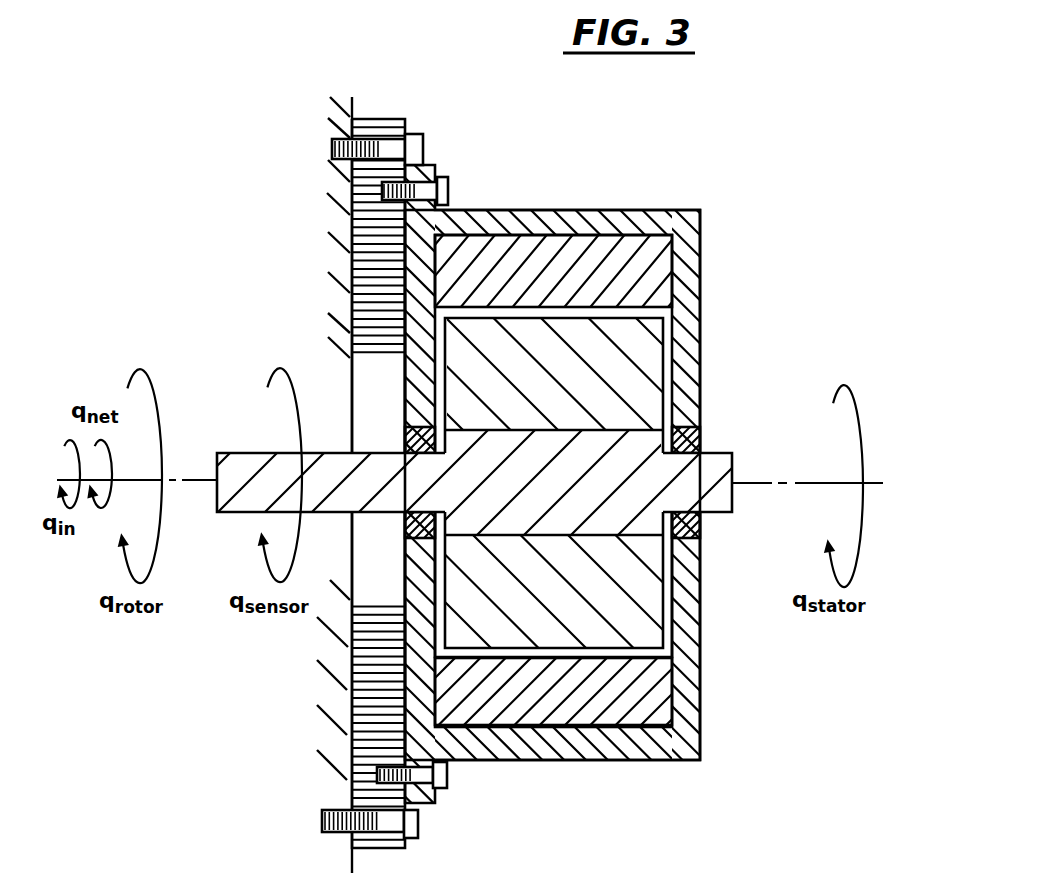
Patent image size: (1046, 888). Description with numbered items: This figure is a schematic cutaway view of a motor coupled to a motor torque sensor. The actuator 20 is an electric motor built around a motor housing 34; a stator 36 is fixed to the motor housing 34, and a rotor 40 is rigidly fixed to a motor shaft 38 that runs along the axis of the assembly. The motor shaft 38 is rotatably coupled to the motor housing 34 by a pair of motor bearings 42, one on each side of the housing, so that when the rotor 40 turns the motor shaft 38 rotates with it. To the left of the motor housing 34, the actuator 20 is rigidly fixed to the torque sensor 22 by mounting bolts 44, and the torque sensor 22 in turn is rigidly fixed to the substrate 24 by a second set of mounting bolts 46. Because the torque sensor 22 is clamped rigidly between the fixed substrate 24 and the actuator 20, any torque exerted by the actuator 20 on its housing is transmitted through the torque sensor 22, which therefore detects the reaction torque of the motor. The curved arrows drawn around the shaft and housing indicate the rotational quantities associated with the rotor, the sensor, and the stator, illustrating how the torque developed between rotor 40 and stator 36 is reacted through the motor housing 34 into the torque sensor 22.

The actuator 20 is at (656, 765).
The torque sensor 22 is at (377, 117).
The substrate 24 is at (338, 188).
The motor housing 34 is at (516, 212).
The stator 36 is at (665, 275).
The motor shaft 38 is at (245, 460).
The rotor 40 is at (655, 378).
The motor bearings 42 is at (402, 538).
The mounting bolts 44 is at (447, 178).
The mounting bolts 46 is at (425, 138).